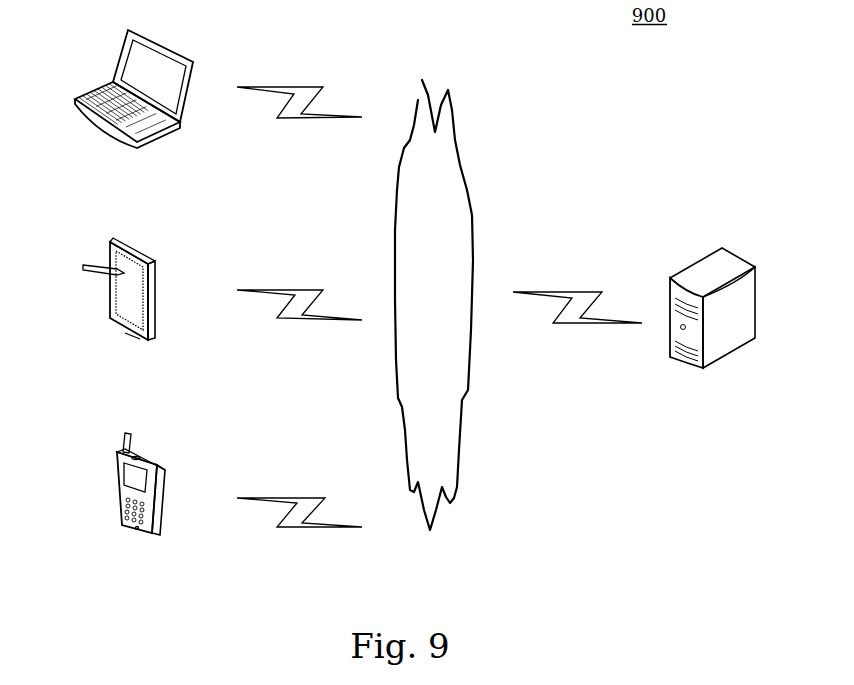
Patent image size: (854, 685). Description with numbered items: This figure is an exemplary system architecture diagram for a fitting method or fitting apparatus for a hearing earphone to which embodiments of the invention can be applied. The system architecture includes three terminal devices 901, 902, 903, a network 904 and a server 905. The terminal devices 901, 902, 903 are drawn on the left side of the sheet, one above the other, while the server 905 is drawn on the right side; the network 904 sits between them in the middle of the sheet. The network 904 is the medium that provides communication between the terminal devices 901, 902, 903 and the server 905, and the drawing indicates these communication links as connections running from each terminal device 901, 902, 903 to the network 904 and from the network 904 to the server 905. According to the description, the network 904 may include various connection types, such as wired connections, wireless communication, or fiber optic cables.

The terminal device 901 is at (141, 500).
The terminal device 902 is at (119, 308).
The terminal device 903 is at (134, 103).
The network 904 is at (434, 305).
The server 905 is at (712, 326).